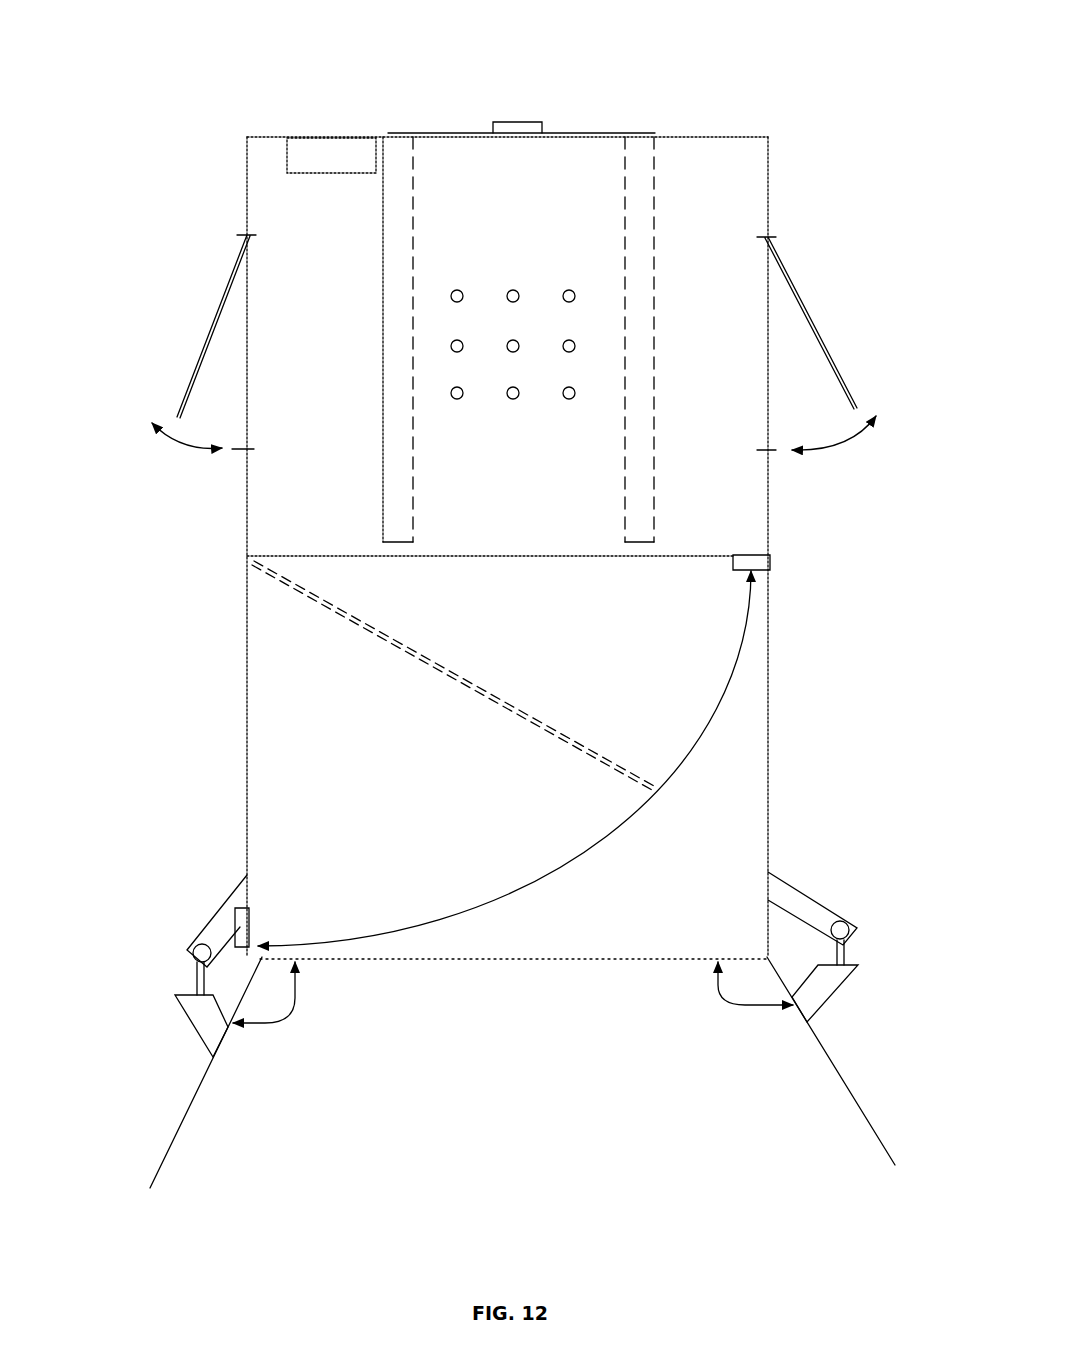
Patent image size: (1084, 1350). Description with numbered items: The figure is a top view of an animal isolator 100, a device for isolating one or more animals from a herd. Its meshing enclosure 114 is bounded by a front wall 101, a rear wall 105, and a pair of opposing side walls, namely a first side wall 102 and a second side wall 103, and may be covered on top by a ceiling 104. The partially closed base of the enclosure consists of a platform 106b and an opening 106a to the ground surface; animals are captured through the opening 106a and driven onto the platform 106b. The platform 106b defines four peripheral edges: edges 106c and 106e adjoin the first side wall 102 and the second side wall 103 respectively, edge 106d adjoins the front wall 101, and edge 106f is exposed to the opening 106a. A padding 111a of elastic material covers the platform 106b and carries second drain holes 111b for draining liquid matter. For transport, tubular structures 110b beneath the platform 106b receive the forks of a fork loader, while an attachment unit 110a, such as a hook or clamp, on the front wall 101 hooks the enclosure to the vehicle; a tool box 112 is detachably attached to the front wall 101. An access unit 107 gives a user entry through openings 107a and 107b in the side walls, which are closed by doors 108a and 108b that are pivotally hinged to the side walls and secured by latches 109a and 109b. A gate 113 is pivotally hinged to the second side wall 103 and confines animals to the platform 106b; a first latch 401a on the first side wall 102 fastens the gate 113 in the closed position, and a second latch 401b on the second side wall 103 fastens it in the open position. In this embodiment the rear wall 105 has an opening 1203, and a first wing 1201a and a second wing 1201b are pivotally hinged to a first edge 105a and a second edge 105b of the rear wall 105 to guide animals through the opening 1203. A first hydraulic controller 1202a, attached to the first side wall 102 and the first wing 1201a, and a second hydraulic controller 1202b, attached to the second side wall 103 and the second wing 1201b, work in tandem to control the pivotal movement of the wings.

The animal isolator 100 is at (773, 63).
The front wall 101 is at (741, 136).
The first side wall 102 is at (770, 178).
The second side wall 103 is at (246, 194).
The ceiling 104 is at (714, 737).
The rear wall 105 is at (620, 961).
The first edge 105a is at (770, 957).
The second edge 105b is at (245, 957).
The opening 106a is at (606, 795).
The platform 106b is at (690, 170).
The edge 106c is at (770, 212).
The edge 106d is at (759, 136).
The edge 106e is at (246, 160).
The edge 106f is at (527, 558).
The access unit 107 is at (178, 373).
The opening 107a is at (772, 331).
The opening 107b is at (246, 350).
The door 108a is at (806, 306).
The door 108b is at (213, 327).
The latch 109a is at (772, 452).
The latch 109b is at (244, 453).
The attachment unit 110a is at (528, 121).
The tubular structures 110b is at (414, 168).
The padding 111a is at (328, 332).
The second drain holes 111b is at (576, 351).
The tool box 112 is at (330, 170).
The gate 113 is at (276, 577).
The meshing enclosure 114 is at (218, 742).
The first latch 401a is at (770, 573).
The second latch 401b is at (233, 907).
The first wing 1201a is at (852, 1100).
The second wing 1201b is at (196, 1100).
The first hydraulic controller 1202a is at (858, 947).
The second hydraulic controller 1202b is at (168, 948).
The opening 1203 is at (510, 961).